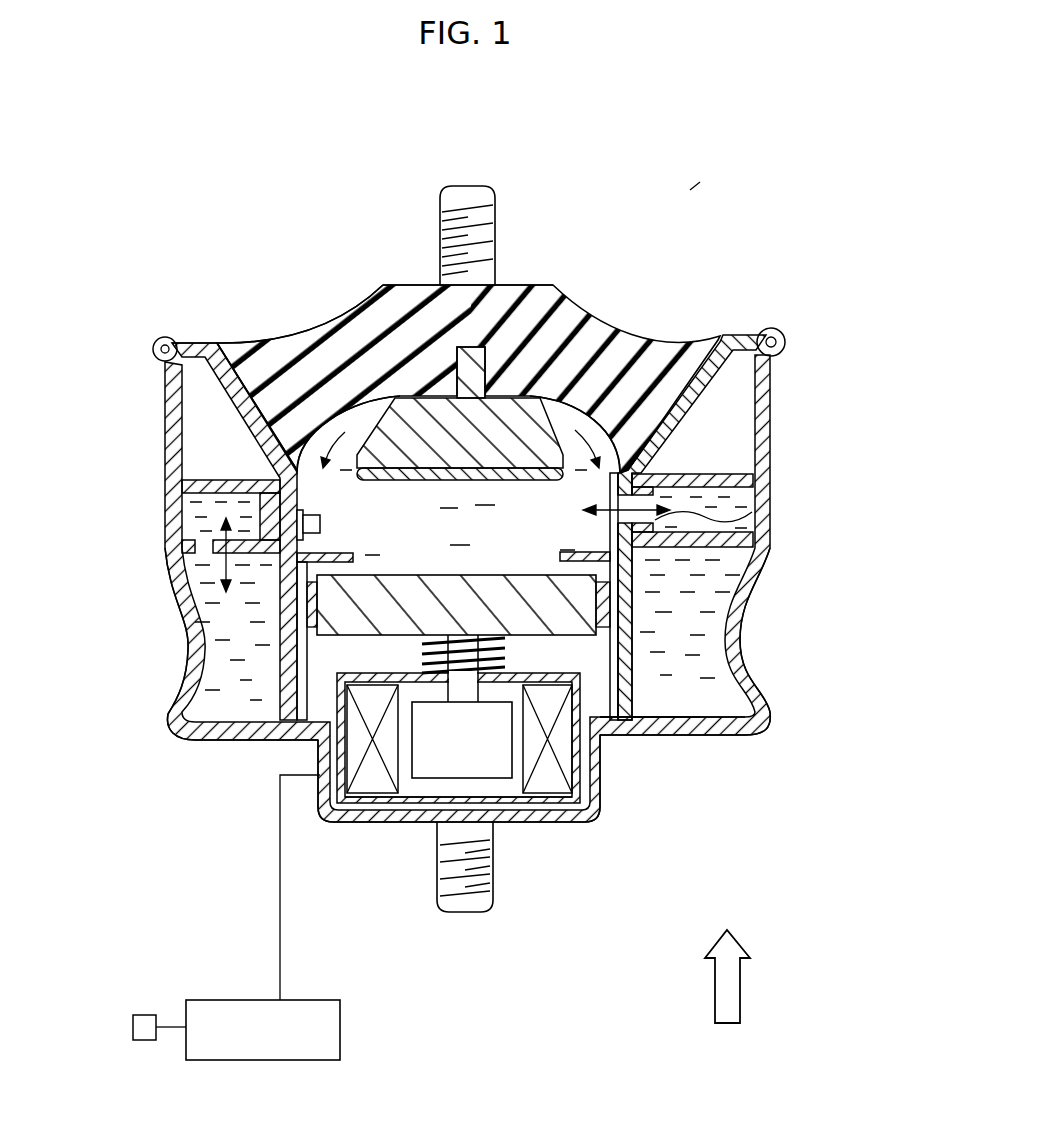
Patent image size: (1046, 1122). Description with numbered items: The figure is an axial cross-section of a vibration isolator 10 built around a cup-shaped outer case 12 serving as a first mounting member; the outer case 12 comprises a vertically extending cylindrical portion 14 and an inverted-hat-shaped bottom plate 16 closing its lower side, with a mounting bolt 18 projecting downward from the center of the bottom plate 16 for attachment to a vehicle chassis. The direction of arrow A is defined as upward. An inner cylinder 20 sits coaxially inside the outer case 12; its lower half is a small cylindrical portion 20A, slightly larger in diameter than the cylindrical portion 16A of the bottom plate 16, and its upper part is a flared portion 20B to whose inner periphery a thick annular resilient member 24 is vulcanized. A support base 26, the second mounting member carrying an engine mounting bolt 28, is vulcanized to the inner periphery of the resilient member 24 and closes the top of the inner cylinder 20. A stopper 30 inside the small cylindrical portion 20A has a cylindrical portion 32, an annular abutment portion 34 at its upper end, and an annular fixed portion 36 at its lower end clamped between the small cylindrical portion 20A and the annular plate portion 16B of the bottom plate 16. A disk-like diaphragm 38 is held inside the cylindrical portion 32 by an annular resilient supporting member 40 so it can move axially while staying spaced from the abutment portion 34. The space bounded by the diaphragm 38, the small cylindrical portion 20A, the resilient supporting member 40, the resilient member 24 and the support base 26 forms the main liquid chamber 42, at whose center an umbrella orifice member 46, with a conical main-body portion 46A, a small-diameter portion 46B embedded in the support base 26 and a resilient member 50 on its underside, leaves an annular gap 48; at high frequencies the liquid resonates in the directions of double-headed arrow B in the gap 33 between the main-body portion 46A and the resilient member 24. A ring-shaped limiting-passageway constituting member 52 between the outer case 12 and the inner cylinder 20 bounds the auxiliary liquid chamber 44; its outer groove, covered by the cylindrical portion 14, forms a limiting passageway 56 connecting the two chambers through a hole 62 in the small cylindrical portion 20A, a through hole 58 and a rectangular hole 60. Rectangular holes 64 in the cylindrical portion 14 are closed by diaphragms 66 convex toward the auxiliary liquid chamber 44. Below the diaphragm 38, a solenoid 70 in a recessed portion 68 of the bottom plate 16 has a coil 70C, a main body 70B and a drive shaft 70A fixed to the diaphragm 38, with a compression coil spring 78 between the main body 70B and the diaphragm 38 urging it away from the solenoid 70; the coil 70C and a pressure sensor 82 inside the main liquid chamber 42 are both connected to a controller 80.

The vibration isolator 10 is at (697, 185).
The outer case 12 is at (777, 420).
The cylindrical portion 14 is at (773, 388).
The bottom plate 16 is at (752, 740).
The cylindrical portion 16A is at (600, 745).
The annular plate portion 16B is at (712, 737).
The mounting bolt 18 is at (493, 894).
The inner cylinder 20 is at (222, 408).
The small cylindrical portion 20A is at (277, 648).
The flared portion 20B is at (215, 445).
The resilient member 24 is at (283, 352).
The support base 26 is at (417, 275).
The mounting bolt 28 is at (500, 200).
The stopper 30 is at (675, 726).
The cylindrical portion 32 is at (615, 730).
The gap 33 is at (335, 430).
The annular abutment portion 34 is at (600, 553).
The annular fixed portion 36 is at (252, 740).
The diaphragm 38 is at (422, 574).
The resilient supporting member 40 is at (622, 648).
The main liquid chamber 42 is at (481, 541).
The auxiliary liquid chamber 44 is at (721, 707).
The umbrella orifice member 46 is at (542, 410).
The main-body portion 46A is at (378, 432).
The small-diameter portion 46B is at (493, 373).
The annular gap 48 is at (352, 470).
The resilient member 50 is at (505, 482).
The limiting-passageway constituting member 52 is at (703, 470).
The limiting passageway 56 is at (748, 510).
The through hole 58 is at (752, 530).
The rectangular hole 60 is at (195, 540).
The hole 62 is at (620, 498).
The rectangular holes 64 is at (165, 722).
The diaphragms 66 is at (185, 628).
The recessed portion 68 is at (565, 822).
The solenoid 70 is at (337, 708).
The drive shaft 70A is at (443, 780).
The main body 70B is at (590, 720).
The coil 70C is at (382, 800).
The compression coil spring 78 is at (422, 656).
The controller 80 is at (342, 1010).
The pressure sensor 82 is at (322, 522).
The arrow A is at (713, 990).
The double-headed arrow B is at (262, 345).